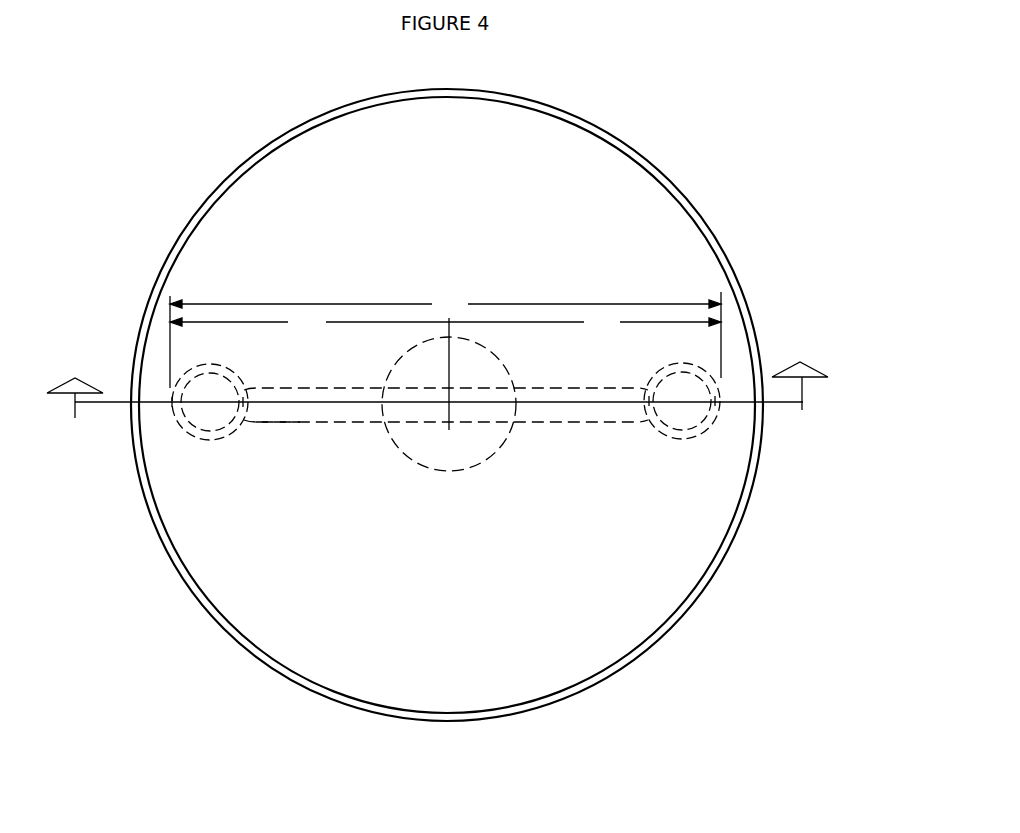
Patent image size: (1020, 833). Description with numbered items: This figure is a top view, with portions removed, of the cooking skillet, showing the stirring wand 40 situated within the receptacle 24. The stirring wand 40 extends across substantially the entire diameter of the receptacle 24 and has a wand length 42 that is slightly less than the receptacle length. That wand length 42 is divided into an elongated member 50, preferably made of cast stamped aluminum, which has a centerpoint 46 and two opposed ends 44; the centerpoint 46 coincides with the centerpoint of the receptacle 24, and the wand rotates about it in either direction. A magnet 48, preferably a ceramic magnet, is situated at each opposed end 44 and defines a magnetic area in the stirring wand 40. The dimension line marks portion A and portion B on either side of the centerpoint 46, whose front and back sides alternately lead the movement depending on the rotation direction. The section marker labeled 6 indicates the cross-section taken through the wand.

The receptacle 24 is at (653, 215).
The section line 6- 6 is at (437, 376).
The stirring wand 40 is at (580, 424).
The wand length 42 is at (445, 340).
The opposed ends 44 is at (173, 418).
The centerpoint 46 is at (449, 404).
The magnet 48 is at (200, 418).
The elongated member 50 is at (287, 415).